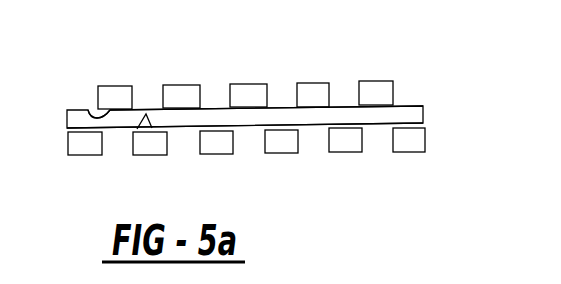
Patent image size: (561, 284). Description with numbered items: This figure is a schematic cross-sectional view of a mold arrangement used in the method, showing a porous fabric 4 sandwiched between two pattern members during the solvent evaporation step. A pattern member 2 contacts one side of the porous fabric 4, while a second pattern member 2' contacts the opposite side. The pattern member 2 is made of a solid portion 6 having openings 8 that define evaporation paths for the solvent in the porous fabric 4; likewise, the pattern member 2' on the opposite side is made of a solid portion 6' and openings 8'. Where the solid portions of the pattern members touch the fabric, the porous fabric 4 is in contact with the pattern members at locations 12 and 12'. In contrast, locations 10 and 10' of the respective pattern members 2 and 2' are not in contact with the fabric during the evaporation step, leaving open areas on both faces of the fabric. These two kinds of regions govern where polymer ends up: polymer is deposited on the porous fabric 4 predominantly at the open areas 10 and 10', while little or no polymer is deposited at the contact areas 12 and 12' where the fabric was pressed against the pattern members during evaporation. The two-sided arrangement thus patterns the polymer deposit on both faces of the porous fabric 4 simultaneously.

The pattern member 2 is at (304, 75).
The pattern member 2' is at (291, 157).
The porous fabric 4 is at (428, 113).
The solid portion 6 is at (396, 65).
The solid portion 6' is at (409, 171).
The openings 8 is at (324, 56).
The openings 8' is at (335, 169).
The open areas 10 is at (193, 68).
The open areas 10' is at (183, 166).
The contact areas 12 is at (71, 96).
The contact areas 12' is at (101, 153).